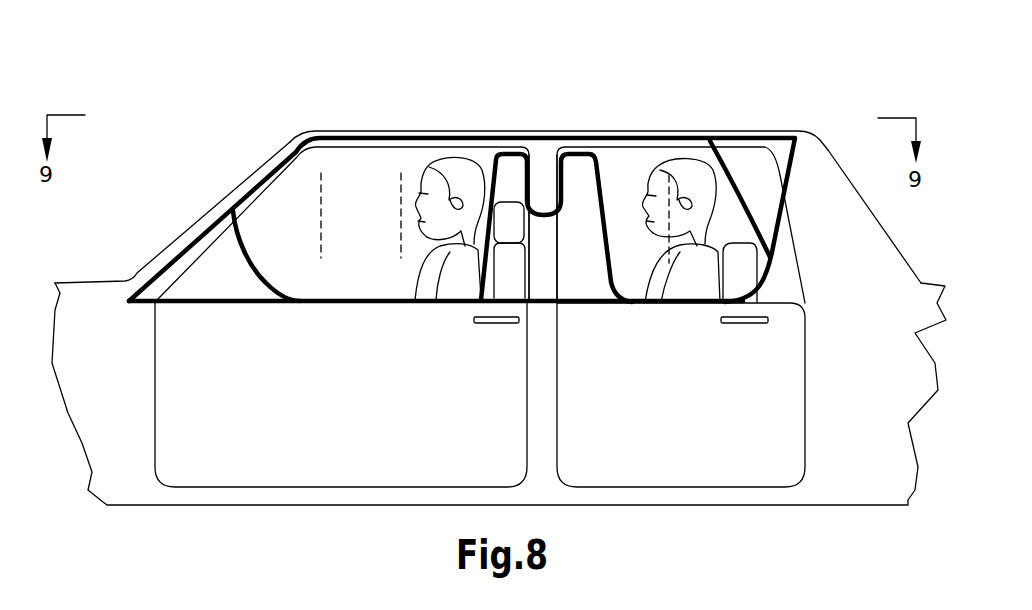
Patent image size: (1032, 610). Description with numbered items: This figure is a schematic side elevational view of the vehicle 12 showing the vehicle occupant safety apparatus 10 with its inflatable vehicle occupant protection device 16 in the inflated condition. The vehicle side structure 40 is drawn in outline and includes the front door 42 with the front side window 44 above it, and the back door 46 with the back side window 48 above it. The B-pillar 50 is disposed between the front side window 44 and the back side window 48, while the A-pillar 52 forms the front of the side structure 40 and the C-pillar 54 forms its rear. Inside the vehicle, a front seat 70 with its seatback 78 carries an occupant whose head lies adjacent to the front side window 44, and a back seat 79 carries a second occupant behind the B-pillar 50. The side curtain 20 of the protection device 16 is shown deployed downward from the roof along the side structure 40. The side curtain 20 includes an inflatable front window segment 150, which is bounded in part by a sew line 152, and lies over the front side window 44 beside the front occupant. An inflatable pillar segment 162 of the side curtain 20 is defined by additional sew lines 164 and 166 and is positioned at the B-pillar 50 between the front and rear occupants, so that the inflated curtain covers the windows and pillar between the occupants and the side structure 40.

The vehicle occupant safety apparatus 10 is at (163, 318).
The vehicle 12 is at (356, 88).
The inflatable vehicle occupant protection device 16 is at (262, 162).
The side curtain 20 is at (243, 313).
The vehicle side structure 40 is at (292, 208).
The front door 42 is at (277, 460).
The front side window 44 is at (208, 242).
The back door 46 is at (706, 457).
The back side window 48 is at (768, 152).
The B-pillar 50 is at (546, 270).
The A-pillar 52 is at (230, 190).
The C-pillar 54 is at (813, 175).
The front seat 70 is at (500, 284).
The seatback 78 is at (509, 227).
The back seat 79 is at (741, 270).
The inflatable front window segment 150 is at (328, 302).
The sew line 152 is at (630, 272).
The inflatable pillar segment 162 is at (544, 193).
The sew line 164 is at (509, 170).
The sew line 166 is at (579, 182).